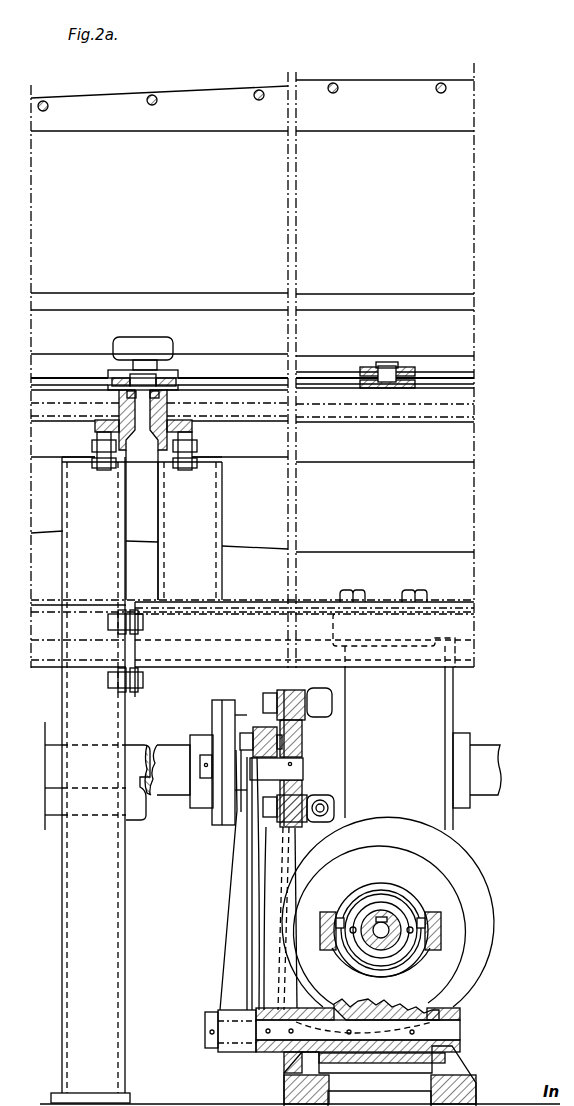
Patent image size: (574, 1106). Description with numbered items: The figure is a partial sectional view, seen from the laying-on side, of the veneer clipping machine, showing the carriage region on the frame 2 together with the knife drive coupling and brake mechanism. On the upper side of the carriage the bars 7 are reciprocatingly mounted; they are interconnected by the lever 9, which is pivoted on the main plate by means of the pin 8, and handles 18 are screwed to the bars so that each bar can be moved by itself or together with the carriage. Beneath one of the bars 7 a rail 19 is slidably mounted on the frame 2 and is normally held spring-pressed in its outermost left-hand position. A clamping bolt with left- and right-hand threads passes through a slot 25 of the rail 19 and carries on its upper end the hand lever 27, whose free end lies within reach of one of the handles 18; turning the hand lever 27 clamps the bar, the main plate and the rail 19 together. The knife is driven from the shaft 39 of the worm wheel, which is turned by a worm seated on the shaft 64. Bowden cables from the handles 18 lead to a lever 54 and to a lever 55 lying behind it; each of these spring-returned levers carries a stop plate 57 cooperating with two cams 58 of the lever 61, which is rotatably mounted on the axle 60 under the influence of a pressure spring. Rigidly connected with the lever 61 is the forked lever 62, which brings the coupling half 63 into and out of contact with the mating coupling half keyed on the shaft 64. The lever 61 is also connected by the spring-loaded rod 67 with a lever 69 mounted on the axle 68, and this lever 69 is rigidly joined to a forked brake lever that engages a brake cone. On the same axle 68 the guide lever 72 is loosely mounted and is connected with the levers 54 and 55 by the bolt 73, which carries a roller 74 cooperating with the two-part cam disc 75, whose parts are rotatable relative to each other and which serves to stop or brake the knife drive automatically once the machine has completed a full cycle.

The frame 2 is at (190, 428).
The bars 7 is at (112, 378).
The pin 8 is at (383, 366).
The lever 9 is at (325, 376).
The handles 18 is at (113, 348).
The rail 19 is at (127, 395).
The slot 25 is at (159, 395).
The hand lever 27 is at (176, 368).
The shaft 39 is at (174, 787).
The lever 54 is at (285, 735).
The lever 55 is at (258, 730).
The stop plate 57 is at (278, 740).
The cams 58 is at (303, 768).
The axle 60 is at (455, 1038).
The lever 61 is at (295, 905).
The forked lever 62 is at (447, 970).
The coupling half 63 is at (492, 938).
The shaft 64 is at (395, 920).
The rod 67 is at (330, 802).
The axle 68 is at (231, 1018).
The lever 69 is at (282, 950).
The guide lever 72 is at (240, 875).
The bolt 73 is at (236, 771).
The roller 74 is at (213, 760).
The cam disc 75 is at (226, 706).